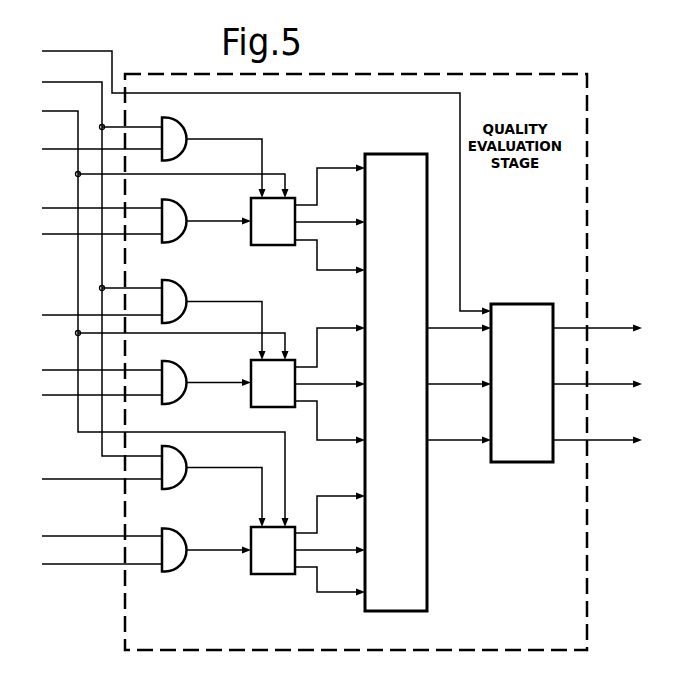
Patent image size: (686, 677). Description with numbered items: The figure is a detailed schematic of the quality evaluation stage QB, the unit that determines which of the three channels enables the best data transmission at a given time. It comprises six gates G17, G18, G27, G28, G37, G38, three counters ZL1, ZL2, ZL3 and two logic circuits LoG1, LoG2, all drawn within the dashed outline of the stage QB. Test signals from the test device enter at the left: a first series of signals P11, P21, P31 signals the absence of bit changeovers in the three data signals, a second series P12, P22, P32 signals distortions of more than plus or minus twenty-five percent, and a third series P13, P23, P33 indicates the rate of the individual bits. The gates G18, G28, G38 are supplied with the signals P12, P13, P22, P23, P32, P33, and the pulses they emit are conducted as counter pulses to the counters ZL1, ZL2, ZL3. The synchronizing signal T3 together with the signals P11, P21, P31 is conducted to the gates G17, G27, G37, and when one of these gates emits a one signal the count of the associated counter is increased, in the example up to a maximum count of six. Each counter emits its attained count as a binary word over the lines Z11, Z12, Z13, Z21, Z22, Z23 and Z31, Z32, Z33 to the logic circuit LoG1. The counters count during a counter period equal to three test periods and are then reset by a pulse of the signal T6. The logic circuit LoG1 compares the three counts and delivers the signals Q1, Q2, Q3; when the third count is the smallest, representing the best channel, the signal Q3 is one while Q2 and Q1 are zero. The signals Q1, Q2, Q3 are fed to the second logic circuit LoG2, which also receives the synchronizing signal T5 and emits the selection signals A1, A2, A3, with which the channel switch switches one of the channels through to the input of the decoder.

The quality evaluation stage QB is at (588, 137).
The logic circuit LoG1 is at (397, 365).
The logic circuit LoG2 is at (521, 364).
The synchronizing signal T5 is at (253, 176).
The synchronizing signal T3 is at (89, 262).
The synchronizing signal T6 is at (152, 312).
The first test signal P11 is at (89, 149).
The second test signal P12 is at (89, 208).
The third test signal P13 is at (89, 234).
The first test signal P21 is at (89, 315).
The second test signal P22 is at (89, 370).
The third test signal P23 is at (89, 395).
The first test signal P31 is at (89, 479).
The second test signal P32 is at (89, 536).
The third test signal P33 is at (89, 564).
The gate G17 is at (176, 135).
The gate G18 is at (176, 217).
The gate G27 is at (176, 298).
The gate G28 is at (176, 379).
The gate G37 is at (176, 464).
The gate G38 is at (176, 546).
The counter ZL1 is at (273, 221).
The counter ZL2 is at (273, 383).
The counter ZL3 is at (273, 550).
The output line Z11 is at (330, 172).
The output line Z12 is at (330, 210).
The output line Z13 is at (330, 257).
The output line Z21 is at (330, 333).
The output line Z22 is at (330, 372).
The output line Z23 is at (330, 422).
The output line Z31 is at (330, 500).
The output line Z32 is at (330, 538).
The output line Z33 is at (330, 580).
The comparison result signal Q1 is at (459, 316).
The comparison result signal Q2 is at (459, 372).
The comparison result signal Q3 is at (459, 428).
The channel selection signal A1 is at (597, 316).
The channel selection signal A2 is at (597, 372).
The channel selection signal A3 is at (597, 428).